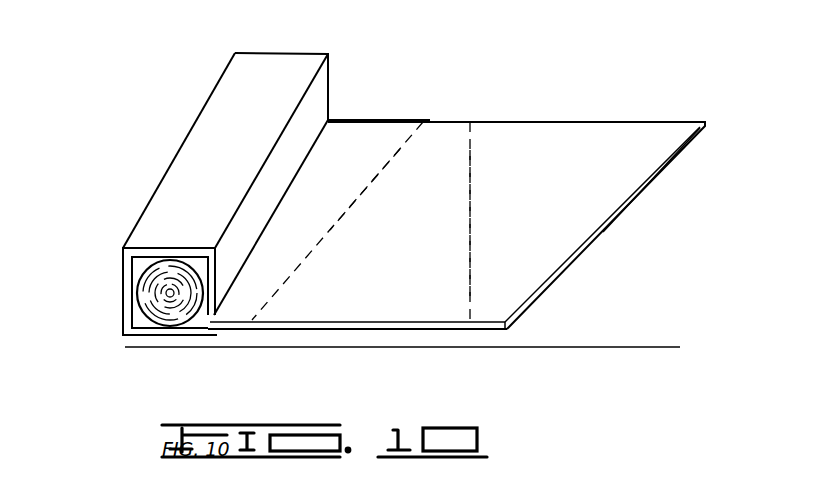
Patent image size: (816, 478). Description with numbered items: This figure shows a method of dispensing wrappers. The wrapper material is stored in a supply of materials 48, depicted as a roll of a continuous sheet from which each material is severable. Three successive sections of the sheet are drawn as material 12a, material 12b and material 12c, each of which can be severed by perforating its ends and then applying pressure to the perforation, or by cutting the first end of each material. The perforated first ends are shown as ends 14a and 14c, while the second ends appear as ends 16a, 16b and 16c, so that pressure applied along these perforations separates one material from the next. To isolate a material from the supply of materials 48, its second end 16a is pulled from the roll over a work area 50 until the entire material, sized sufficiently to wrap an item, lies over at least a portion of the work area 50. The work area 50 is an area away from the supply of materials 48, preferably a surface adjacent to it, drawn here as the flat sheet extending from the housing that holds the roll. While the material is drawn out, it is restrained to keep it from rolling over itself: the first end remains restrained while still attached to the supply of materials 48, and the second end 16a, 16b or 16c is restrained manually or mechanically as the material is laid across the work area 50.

The material 12a is at (556, 123).
The material 12b is at (395, 329).
The material 12c is at (367, 123).
The end 14a is at (470, 185).
The end 14c is at (300, 282).
The end 16a is at (602, 233).
The end 16b is at (470, 258).
The end 16c is at (397, 153).
The supply of materials 48 is at (150, 331).
The work area 50 is at (180, 348).